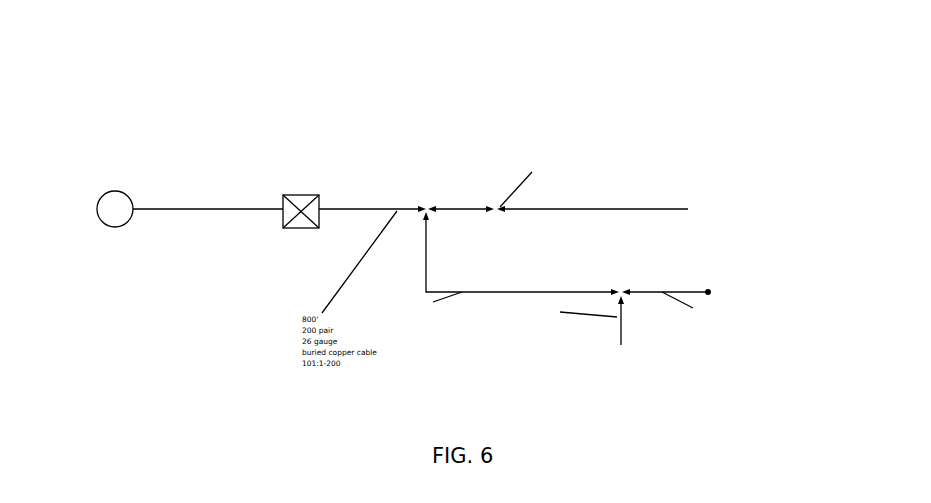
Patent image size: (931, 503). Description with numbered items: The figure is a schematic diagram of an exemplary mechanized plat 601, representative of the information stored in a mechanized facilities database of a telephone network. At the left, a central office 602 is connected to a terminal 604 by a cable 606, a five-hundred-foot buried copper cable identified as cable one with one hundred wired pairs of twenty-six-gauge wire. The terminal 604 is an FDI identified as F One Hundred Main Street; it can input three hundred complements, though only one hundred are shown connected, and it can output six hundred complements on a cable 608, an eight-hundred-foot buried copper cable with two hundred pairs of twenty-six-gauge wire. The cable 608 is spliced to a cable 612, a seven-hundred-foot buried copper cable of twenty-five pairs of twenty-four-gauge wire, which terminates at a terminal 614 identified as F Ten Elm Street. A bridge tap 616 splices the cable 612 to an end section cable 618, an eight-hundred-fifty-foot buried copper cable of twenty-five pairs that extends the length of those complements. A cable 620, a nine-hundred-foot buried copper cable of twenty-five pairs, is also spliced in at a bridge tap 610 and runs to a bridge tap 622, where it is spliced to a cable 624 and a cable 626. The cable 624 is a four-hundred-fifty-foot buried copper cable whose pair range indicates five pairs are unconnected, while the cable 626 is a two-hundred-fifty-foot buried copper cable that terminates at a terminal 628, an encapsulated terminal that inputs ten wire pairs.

The mechanized plat 601 is at (738, 39).
The central office 602 is at (77, 182).
The terminal 604 is at (266, 208).
The cable 606 is at (208, 212).
The cable 608 is at (368, 178).
The bridge tap 610 is at (393, 160).
The cable 612 is at (466, 169).
The terminal 614 is at (527, 141).
The bridge tap 616 is at (547, 203).
The end section cable 618 is at (596, 184).
The cable 620 is at (513, 310).
The bridge tap 622 is at (579, 283).
The cable 624 is at (610, 342).
The cable 626 is at (700, 289).
The terminal 628 is at (751, 289).